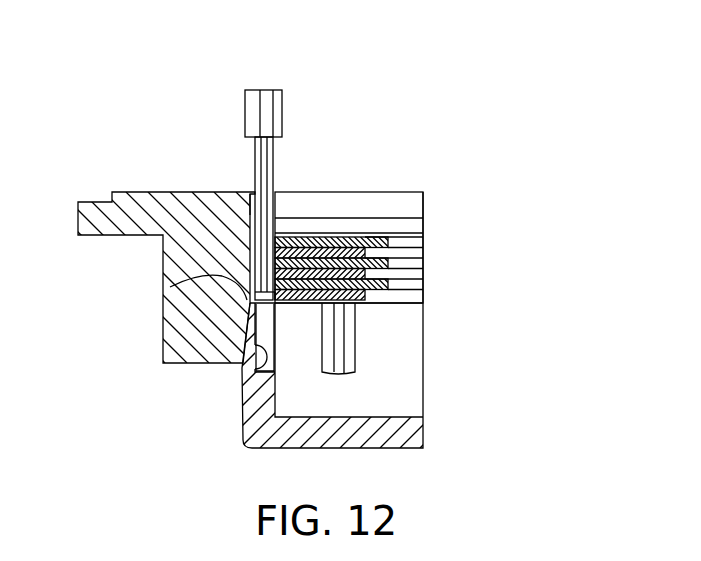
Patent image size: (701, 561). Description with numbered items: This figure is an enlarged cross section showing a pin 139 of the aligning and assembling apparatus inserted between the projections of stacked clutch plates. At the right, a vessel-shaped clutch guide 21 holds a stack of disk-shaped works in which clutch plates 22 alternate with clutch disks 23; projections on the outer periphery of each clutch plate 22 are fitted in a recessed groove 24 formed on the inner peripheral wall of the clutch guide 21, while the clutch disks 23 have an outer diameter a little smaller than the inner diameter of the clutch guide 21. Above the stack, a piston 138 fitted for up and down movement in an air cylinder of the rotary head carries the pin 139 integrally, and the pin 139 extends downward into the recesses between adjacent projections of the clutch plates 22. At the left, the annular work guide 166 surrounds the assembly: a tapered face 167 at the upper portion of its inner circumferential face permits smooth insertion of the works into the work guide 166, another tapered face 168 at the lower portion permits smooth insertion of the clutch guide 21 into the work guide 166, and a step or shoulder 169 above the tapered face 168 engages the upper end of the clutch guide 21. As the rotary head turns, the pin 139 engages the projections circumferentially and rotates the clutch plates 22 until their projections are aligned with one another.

The clutch guide 21 is at (243, 432).
The clutch plate 22 is at (353, 240).
The clutch disk 23 is at (302, 238).
The recessed groove 24 is at (243, 370).
The piston 138 is at (262, 90).
The pin 139 is at (256, 150).
The work guide 166 is at (165, 240).
The tapered face 167 is at (252, 196).
The tapered face 168 is at (250, 348).
The step or shoulder 169 is at (170, 287).